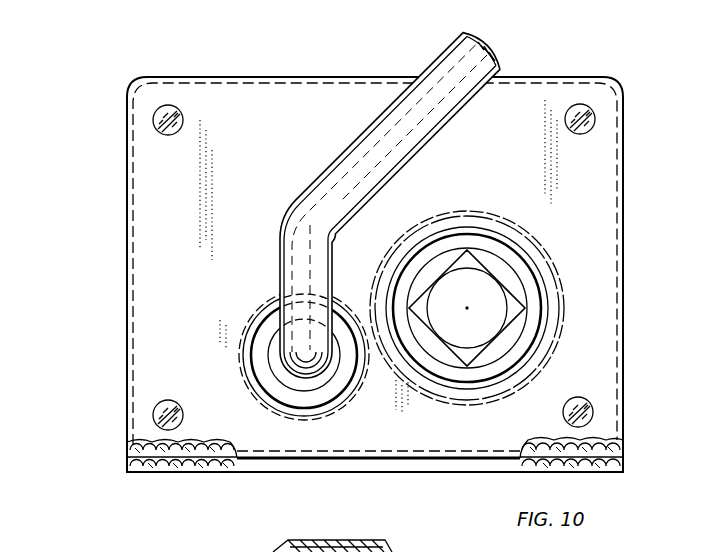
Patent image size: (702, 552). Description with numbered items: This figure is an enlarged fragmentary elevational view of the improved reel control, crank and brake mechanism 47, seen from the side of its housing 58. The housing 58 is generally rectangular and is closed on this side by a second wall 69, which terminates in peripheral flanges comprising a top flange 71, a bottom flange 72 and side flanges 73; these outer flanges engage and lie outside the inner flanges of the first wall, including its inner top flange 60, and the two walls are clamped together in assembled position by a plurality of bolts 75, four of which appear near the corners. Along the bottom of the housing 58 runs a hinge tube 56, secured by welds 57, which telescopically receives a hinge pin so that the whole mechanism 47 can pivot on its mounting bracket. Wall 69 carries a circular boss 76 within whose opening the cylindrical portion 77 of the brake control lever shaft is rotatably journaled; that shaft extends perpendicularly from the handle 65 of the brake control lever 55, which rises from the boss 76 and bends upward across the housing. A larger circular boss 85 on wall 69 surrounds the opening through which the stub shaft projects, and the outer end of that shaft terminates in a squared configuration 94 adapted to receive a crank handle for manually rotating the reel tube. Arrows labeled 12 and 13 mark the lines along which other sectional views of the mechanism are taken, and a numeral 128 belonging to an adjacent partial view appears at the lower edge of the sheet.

The housing 58 is at (625, 226).
The second wall 69 is at (583, 176).
The top flange 71 is at (513, 79).
The bottom flange 72 is at (261, 453).
The side flanges 73 is at (133, 322).
The hinge tube 56 is at (393, 463).
The weld 57 is at (166, 468).
The bolts 75 is at (153, 120).
The larger circular boss 85 is at (475, 232).
The squared configuration 94 is at (483, 330).
The circular boss 76 is at (262, 337).
The cylindrical portion 77 is at (278, 372).
The brake control lever 55 is at (428, 138).
The handle 65 is at (383, 127).
The reel control, crank and brake mechanism 47 is at (310, 174).
The section line 13 is at (283, 35).
The section line 12 is at (491, 28).
The top flange 60 is at (349, 544).
The lower element 128 is at (392, 549).